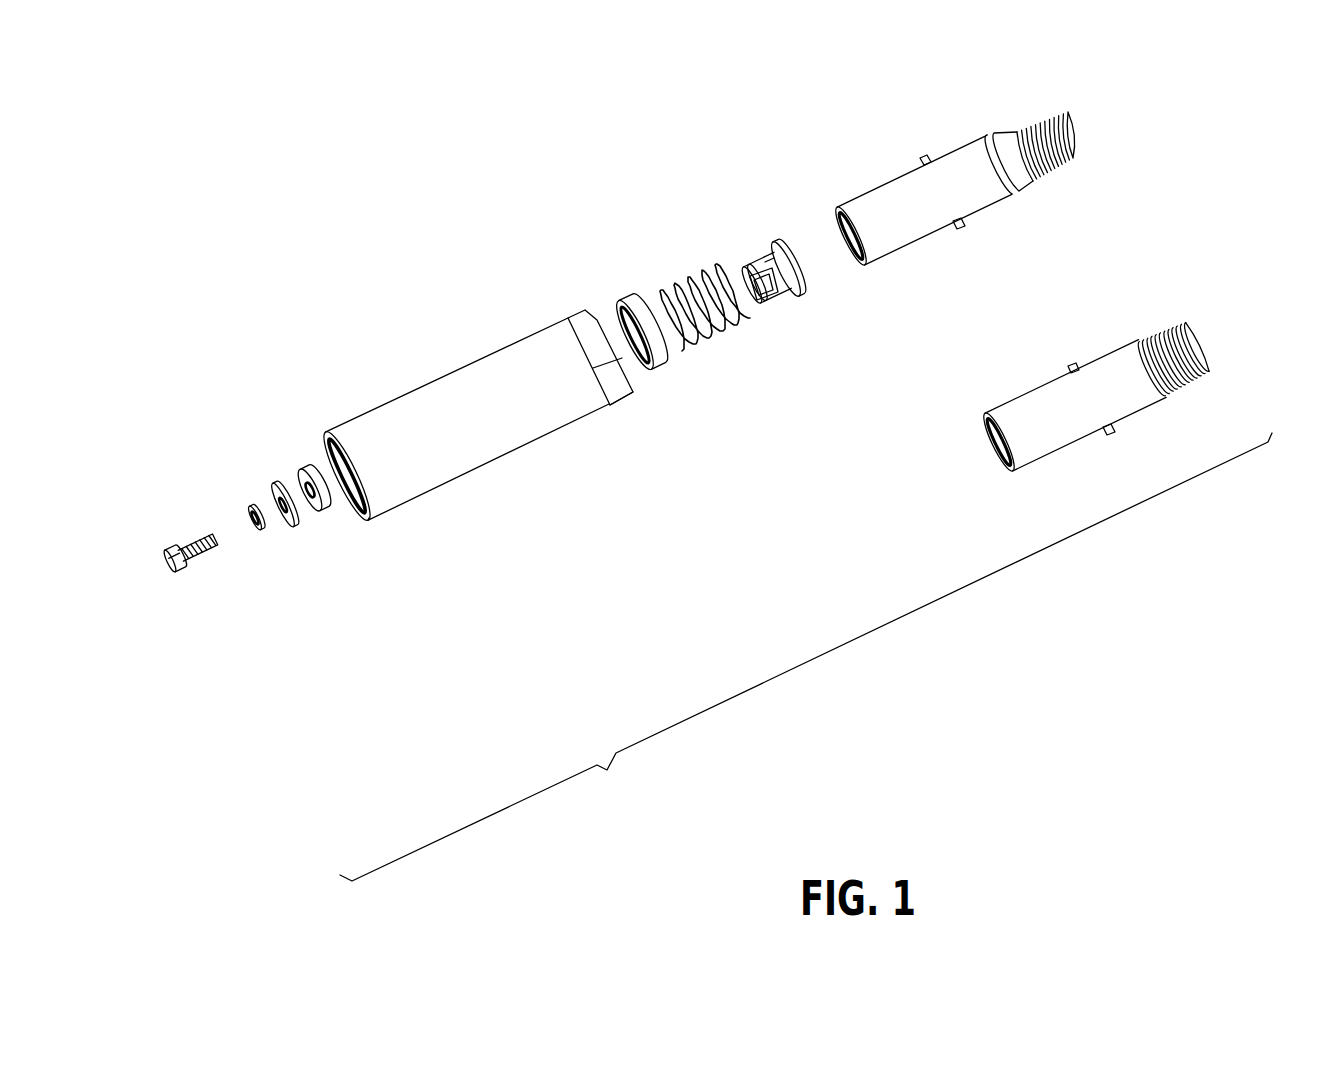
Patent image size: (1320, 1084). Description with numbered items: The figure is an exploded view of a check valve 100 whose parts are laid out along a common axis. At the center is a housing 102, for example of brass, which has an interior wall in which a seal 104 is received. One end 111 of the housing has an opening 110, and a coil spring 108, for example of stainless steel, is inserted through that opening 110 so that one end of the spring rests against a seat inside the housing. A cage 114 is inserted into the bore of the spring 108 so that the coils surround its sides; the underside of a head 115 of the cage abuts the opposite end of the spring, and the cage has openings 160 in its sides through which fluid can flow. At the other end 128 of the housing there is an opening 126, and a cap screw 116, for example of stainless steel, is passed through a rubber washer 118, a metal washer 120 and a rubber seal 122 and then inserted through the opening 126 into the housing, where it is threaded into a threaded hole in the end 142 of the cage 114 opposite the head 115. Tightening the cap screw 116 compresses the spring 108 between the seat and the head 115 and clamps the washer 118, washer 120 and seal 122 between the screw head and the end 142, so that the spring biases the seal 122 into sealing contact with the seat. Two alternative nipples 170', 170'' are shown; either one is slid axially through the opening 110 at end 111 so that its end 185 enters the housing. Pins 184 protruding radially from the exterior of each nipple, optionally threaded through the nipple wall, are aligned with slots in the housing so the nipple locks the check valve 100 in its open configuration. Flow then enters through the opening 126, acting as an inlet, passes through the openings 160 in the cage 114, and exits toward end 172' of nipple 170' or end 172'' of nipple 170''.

The check valve 100 is at (806, 657).
The housing 102 is at (445, 390).
The seal 104 is at (660, 360).
The coil spring 108 is at (677, 292).
The opening 110 is at (607, 323).
The end 111 is at (630, 383).
The cage 114 is at (775, 262).
The head 115 is at (778, 240).
The cap screw 116 is at (172, 546).
The washer 118 is at (250, 511).
The washer 120 is at (278, 489).
The seal 122 is at (302, 468).
The opening 126 is at (352, 490).
The end 128 is at (362, 513).
The end 142 is at (733, 272).
The openings 160 is at (764, 285).
The nipple 170' is at (932, 210).
The nipple 170'' is at (1072, 418).
The end 172' is at (1071, 131).
The end 172'' is at (1196, 340).
The pins 184 is at (958, 219).
The end 185 is at (859, 265).